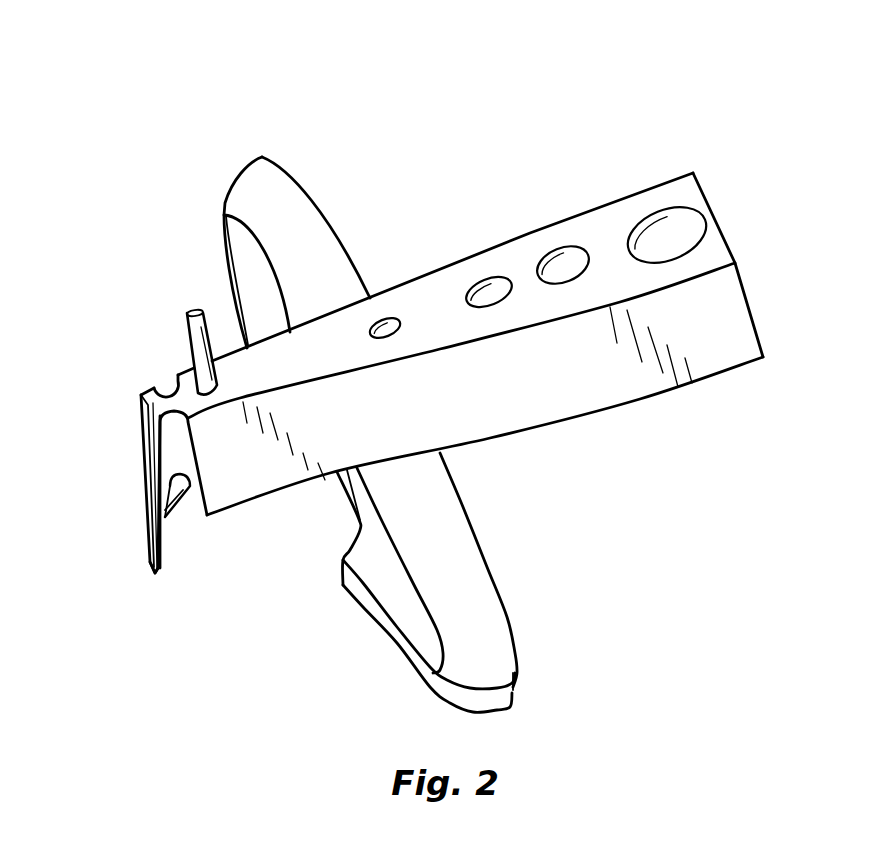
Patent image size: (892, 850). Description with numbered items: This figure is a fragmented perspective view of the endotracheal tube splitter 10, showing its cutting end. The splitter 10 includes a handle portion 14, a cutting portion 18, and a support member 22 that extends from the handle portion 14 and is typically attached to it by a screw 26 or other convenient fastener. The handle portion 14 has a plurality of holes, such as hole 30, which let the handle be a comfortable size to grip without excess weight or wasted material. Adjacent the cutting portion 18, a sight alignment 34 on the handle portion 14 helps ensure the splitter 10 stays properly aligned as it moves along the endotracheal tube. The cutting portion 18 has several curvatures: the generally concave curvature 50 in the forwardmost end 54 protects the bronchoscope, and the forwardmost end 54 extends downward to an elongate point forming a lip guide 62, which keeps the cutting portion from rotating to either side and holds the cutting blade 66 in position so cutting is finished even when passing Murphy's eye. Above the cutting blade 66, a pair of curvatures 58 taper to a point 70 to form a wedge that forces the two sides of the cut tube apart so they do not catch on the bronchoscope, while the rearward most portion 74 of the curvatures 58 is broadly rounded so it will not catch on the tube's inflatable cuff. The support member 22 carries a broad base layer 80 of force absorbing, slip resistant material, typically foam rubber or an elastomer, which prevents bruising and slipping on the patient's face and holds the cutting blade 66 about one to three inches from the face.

The endotracheal tube splitter 10 is at (563, 182).
The handle portion 14 is at (727, 320).
The cutting portion 18 is at (112, 276).
The support member 22 is at (490, 602).
The screw 26 is at (386, 318).
The hole 30 is at (694, 212).
The sight alignment 34 is at (196, 308).
The curvature 50 is at (144, 426).
The forwardmost end 54 is at (140, 391).
The curvatures 58 is at (166, 388).
The lip guide 62 is at (155, 576).
The cutting blade 66 is at (176, 507).
The point 70 is at (172, 512).
The rearward most portion 74 is at (190, 437).
The base layer 80 is at (504, 697).